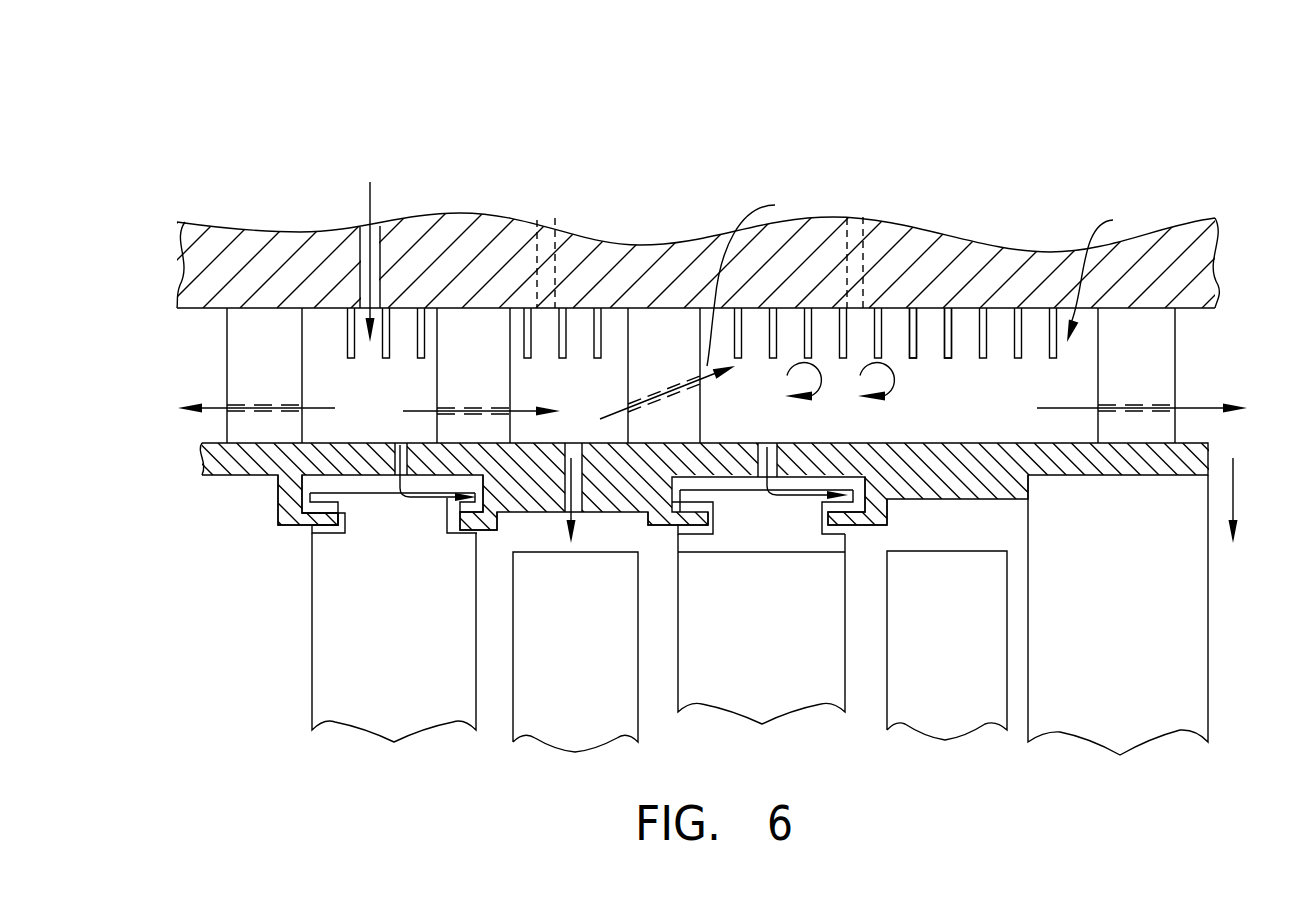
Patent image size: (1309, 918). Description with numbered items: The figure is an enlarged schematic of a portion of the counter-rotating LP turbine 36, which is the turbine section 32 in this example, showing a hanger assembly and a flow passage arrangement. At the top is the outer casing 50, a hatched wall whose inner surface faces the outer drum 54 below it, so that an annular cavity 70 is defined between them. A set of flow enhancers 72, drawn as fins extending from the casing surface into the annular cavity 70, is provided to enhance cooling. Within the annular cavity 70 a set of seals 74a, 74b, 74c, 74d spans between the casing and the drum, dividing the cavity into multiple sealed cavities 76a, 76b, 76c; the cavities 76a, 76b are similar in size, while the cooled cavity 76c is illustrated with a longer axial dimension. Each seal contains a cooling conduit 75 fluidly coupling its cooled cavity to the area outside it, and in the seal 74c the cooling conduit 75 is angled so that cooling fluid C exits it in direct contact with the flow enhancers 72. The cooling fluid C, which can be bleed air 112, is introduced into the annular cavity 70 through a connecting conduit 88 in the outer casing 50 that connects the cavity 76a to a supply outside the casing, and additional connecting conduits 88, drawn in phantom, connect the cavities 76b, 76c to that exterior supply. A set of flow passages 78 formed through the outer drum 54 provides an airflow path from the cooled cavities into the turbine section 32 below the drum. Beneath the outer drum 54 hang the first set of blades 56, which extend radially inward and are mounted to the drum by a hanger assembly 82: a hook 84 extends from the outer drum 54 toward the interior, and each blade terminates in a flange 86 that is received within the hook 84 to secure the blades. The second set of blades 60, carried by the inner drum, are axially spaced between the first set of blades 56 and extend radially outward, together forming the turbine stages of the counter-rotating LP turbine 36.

The turbine section 32 is at (268, 99).
The bleed air 112 is at (370, 205).
The connecting conduit 88 is at (383, 247).
The outer casing 50 is at (585, 243).
The cooling fluid C is at (750, 272).
The flow enhancers 72 is at (910, 317).
The annular cavity 70 is at (1107, 271).
The seal 74a is at (295, 364).
The seal 74b is at (505, 381).
The seal 74c is at (688, 367).
The seal 74d is at (1167, 369).
The sealed cavity 76a is at (390, 397).
The sealed cavity 76b is at (590, 397).
The sealed cavity 76c is at (972, 406).
The cooling conduit 75 is at (262, 405).
The flow passages 78 is at (400, 445).
The outer drum 54 is at (1170, 463).
The hanger assembly 82 is at (250, 531).
The hook 84 is at (315, 522).
The flange 86 is at (313, 500).
The first set of blades 56 is at (398, 604).
The second set of blades 60 is at (579, 632).
The counter-rotating LP turbine 36 is at (938, 791).